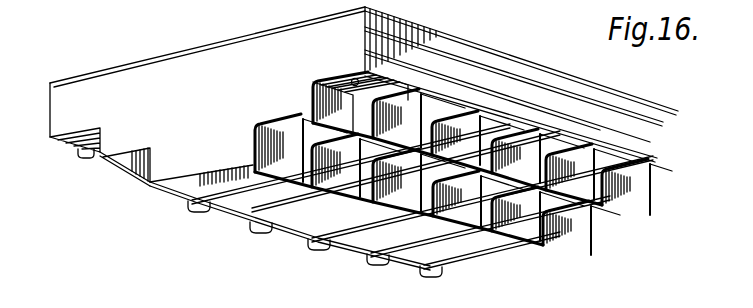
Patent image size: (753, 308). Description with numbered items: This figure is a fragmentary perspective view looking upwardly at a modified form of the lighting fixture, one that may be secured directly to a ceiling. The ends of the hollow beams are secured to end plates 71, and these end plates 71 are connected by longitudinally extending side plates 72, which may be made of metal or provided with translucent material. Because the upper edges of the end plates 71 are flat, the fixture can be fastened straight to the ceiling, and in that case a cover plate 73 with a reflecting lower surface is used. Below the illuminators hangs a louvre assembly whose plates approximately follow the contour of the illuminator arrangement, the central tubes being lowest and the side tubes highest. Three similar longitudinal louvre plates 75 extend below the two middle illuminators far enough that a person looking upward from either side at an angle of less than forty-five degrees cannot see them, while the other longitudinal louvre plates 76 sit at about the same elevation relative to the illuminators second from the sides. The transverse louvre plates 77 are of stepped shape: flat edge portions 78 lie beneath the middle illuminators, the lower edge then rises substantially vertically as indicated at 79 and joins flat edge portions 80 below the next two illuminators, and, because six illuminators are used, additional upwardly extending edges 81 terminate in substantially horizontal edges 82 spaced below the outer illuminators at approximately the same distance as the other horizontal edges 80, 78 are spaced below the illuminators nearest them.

The end plate 71 is at (207, 96).
The side plate 72 is at (462, 67).
The cover plate 73 is at (160, 57).
The longitudinal louvre plate 75 is at (300, 234).
The longitudinal louvre plate 76 is at (572, 205).
The transverse louvre plate 77 is at (280, 228).
The flat edge portion 78 is at (462, 272).
The upwardly extending edge 79 is at (545, 223).
The flat edge portion 80 is at (433, 195).
The upwardly extending edge 81 is at (430, 133).
The horizontal edge 82 is at (513, 149).